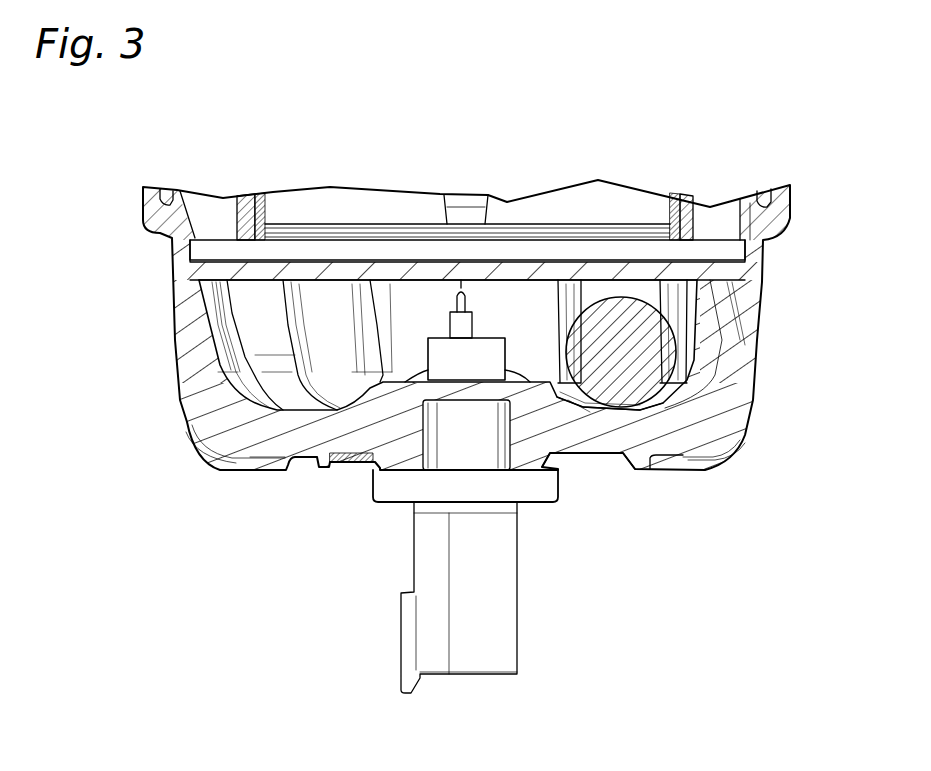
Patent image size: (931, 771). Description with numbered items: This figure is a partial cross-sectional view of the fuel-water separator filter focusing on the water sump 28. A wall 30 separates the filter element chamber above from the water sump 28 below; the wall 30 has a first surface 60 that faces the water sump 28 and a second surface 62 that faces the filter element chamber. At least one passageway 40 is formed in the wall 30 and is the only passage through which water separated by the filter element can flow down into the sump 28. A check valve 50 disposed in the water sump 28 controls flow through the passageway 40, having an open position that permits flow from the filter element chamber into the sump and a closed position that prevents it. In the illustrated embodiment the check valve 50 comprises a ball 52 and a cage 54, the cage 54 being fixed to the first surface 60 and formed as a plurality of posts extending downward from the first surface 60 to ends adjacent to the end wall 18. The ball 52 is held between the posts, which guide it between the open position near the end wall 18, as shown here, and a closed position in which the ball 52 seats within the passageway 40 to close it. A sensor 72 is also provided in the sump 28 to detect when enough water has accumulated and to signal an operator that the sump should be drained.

The end wall 18 is at (583, 455).
The water sump 28 is at (318, 342).
The wall 30 is at (248, 280).
The passageway 40 is at (622, 272).
The check valve 50 is at (697, 357).
The ball 52 is at (637, 407).
The cage 54 is at (690, 325).
The first surface 60 is at (317, 280).
The second surface 62 is at (357, 262).
The sensor 72 is at (427, 350).